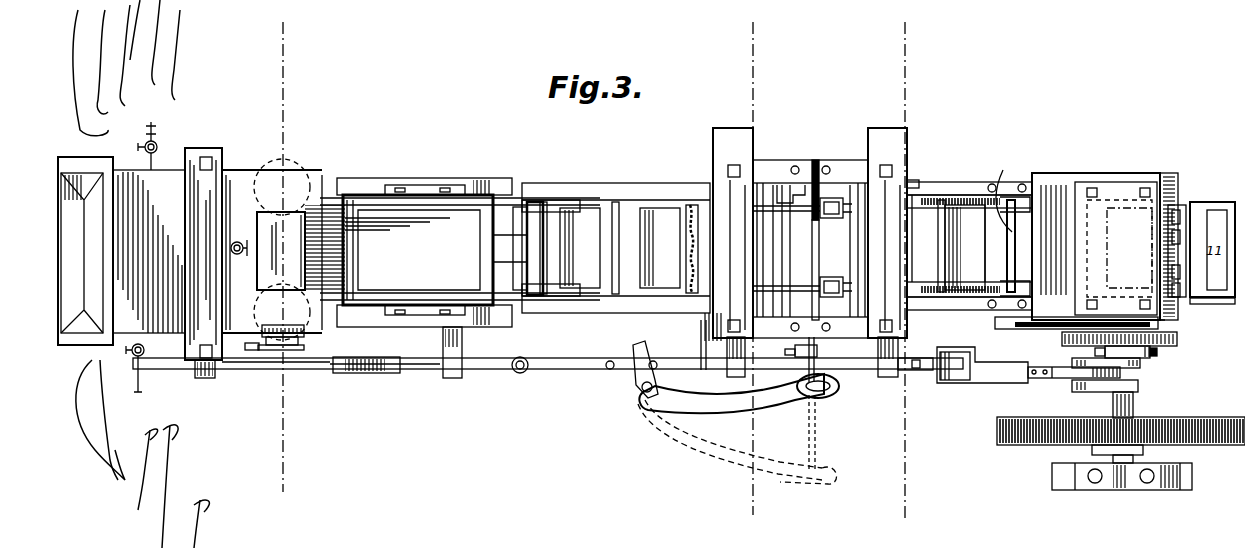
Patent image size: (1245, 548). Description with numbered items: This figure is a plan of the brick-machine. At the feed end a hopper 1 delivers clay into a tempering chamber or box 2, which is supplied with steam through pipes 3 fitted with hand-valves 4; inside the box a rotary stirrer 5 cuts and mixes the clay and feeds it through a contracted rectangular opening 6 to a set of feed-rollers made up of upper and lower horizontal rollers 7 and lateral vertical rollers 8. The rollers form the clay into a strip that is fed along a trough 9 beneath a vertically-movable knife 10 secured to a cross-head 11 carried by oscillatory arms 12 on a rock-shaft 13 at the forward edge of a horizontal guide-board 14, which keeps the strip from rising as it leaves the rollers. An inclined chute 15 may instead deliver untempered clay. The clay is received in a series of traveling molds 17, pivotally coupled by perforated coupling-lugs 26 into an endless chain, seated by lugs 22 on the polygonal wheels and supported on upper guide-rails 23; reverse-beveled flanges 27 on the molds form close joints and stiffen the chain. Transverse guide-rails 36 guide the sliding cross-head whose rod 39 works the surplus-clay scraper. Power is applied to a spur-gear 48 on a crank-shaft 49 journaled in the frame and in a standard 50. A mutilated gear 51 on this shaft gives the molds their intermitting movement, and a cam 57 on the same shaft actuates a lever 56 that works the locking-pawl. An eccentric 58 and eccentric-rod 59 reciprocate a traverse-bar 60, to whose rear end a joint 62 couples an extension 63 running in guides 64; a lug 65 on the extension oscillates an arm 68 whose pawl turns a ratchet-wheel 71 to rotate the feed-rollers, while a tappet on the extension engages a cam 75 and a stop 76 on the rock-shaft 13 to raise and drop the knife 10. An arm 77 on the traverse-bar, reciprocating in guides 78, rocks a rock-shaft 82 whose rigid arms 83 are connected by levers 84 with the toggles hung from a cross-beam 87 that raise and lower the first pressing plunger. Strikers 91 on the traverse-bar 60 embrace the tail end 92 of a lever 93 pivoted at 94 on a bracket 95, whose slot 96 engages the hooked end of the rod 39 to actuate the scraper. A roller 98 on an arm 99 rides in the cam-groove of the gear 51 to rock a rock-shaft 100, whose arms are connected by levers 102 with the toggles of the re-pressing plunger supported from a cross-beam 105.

The hopper 1 is at (78, 208).
The tempering chamber or box 2 is at (149, 251).
The steam pipes 3 is at (189, 255).
The hand-valves 4 is at (132, 147).
The rotary stirrer 5 is at (750, 270).
The contracted rectangular opening 6 is at (279, 259).
The horizontal feed-rollers 7 is at (281, 251).
The vertical feed-rollers 8 is at (286, 162).
The trough 9 is at (418, 250).
The knife 10 is at (510, 245).
The cross bar or head 11 is at (490, 250).
The oscillatory arms 12 is at (412, 190).
The rock-shaft 13 is at (460, 249).
The horizontal guide-board 14 is at (377, 252).
The inclined chute 15 is at (690, 200).
The traveling molds 17 is at (772, 247).
The lugs 22 is at (1178, 195).
The upper guide-rails 23 is at (616, 248).
The perforated coupling-lugs 26 is at (1172, 252).
The flanges 27 is at (1204, 308).
The transverse guide-rails 36 is at (760, 258).
The rod 39 is at (802, 392).
The spur-gear 48 is at (997, 431).
The crank-shaft 49 is at (1122, 404).
The standard 50 is at (1104, 490).
The mutilated gear 51 is at (1160, 342).
The lever 56 is at (1095, 350).
The cam 57 is at (1140, 364).
The eccentric 58 is at (1068, 372).
The eccentric-rod 59 is at (1005, 372).
The traverse-bar 60 is at (570, 370).
The joint 62 is at (520, 373).
The extension bar 63 is at (428, 370).
The guides 64 is at (203, 378).
The lug 65 is at (254, 352).
The arm 68 is at (262, 332).
The ratchet-wheel 71 is at (304, 347).
The inclined arm or cam 75 is at (366, 356).
The stop or lug 76 is at (318, 370).
The arm 77 is at (905, 370).
The guides 78 is at (727, 370).
The rock-shaft 82 is at (816, 231).
The rigid arms 83 is at (838, 196).
The levers 84 is at (771, 248).
The cross-beam 87 is at (788, 185).
The strikers 91 is at (608, 360).
The tail end 92 is at (636, 375).
The lever 93 is at (731, 393).
The pivot 94 is at (645, 393).
The bracket 95 is at (697, 341).
The slot 96 is at (832, 395).
The pin or roller 98 is at (1130, 320).
The arm 99 is at (1076, 333).
The rock-shaft 100 is at (1010, 190).
The levers 102 is at (955, 205).
The cross-beam 105 is at (908, 200).